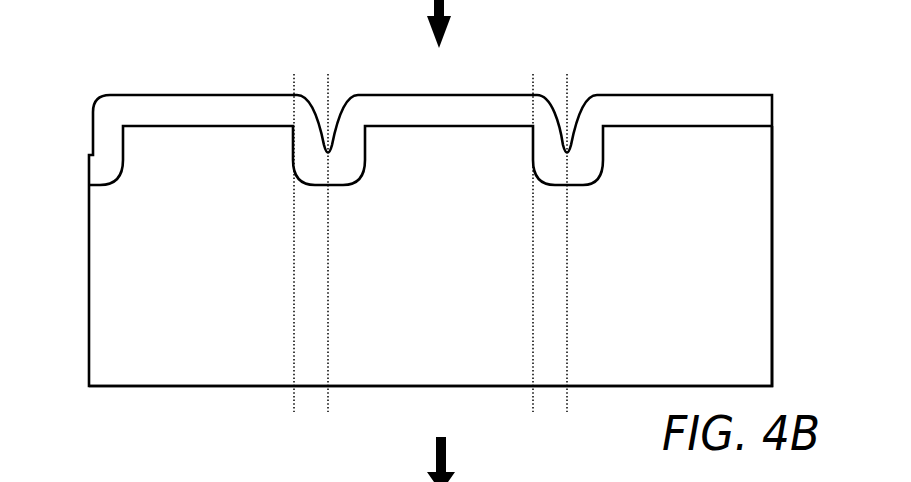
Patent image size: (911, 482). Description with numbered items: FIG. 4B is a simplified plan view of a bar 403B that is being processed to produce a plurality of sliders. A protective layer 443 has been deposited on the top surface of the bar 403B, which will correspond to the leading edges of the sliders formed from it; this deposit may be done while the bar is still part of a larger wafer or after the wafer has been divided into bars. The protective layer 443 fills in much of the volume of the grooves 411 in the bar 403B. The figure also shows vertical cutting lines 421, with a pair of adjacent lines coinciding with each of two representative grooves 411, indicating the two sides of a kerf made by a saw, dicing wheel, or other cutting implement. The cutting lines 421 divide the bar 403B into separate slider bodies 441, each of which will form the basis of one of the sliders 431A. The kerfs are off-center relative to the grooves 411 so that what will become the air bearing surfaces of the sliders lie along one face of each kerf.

The bar 403B is at (773, 73).
The protective layer 443 is at (173, 94).
The sliders 431A is at (484, 94).
The grooves 411 is at (98, 93).
The cutting lines 421 is at (328, 413).
The slider bodies 441 is at (226, 271).